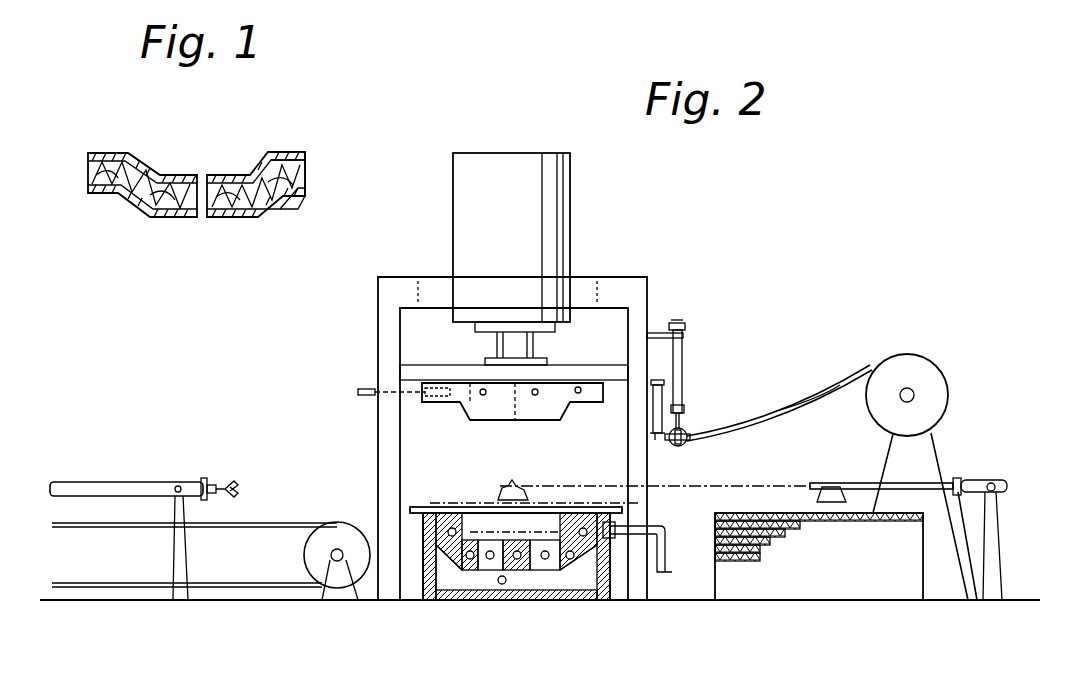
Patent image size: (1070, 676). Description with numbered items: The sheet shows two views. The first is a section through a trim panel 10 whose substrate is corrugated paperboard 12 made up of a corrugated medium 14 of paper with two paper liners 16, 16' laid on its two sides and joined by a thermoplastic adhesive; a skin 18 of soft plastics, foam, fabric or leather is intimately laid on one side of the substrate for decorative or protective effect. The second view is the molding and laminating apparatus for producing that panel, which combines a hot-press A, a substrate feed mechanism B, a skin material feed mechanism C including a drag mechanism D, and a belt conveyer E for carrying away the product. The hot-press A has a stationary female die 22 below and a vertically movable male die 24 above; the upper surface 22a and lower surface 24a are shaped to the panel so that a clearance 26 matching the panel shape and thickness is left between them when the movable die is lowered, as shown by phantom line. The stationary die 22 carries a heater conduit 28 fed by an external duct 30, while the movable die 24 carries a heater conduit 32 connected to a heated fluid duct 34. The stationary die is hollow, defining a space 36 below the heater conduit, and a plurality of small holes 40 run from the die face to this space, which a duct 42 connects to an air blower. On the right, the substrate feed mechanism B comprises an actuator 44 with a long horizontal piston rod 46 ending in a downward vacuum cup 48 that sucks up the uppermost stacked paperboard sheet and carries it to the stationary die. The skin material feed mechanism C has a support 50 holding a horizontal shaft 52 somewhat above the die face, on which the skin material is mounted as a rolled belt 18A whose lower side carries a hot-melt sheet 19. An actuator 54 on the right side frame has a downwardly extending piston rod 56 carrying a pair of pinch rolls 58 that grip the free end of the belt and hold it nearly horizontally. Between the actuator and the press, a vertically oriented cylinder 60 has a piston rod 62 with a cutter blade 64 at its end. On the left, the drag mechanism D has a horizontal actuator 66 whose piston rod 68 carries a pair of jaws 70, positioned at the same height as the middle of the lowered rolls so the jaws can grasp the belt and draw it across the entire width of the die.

In FIG. 1, the trim panel 10 is at (271, 147).
In FIG. 1, the corrugated paperboard 12 is at (309, 174).
In FIG. 2, the corrugated paperboard 12 is at (738, 487).
In FIG. 1, the corrugated medium 14 is at (88, 178).
In FIG. 1, the paper liner 16 is at (315, 145).
In FIG. 1, the paper liner 16' is at (326, 212).
In FIG. 1, the skin 18 is at (131, 160).
In FIG. 2, the rolled belt 18A is at (783, 412).
In FIG. 2, the hot-melt sheet 19 is at (817, 396).
In FIG. 2, the hot-press A is at (612, 276).
In FIG. 2, the substrate feed mechanism B is at (958, 477).
In FIG. 2, the skin material feed mechanism C is at (716, 385).
In FIG. 2, the drag mechanism D is at (226, 478).
In FIG. 2, the belt conveyer E is at (283, 518).
In FIG. 2, the stationary die 22 is at (608, 598).
In FIG. 2, the upper surface 22a is at (434, 512).
In FIG. 2, the movable die 24 is at (473, 405).
In FIG. 2, the lower surface 24a is at (512, 422).
In FIG. 2, the clearance 26 is at (494, 500).
In FIG. 2, the heater conduit 28 is at (480, 540).
In FIG. 2, the external duct 30 is at (666, 548).
In FIG. 2, the heater conduit 32 is at (581, 388).
In FIG. 2, the heated fluid duct 34 is at (358, 392).
In FIG. 2, the space 36 is at (430, 597).
In FIG. 2, the holes 40 is at (470, 562).
In FIG. 2, the duct 42 is at (504, 585).
In FIG. 2, the actuator 44 is at (978, 488).
In FIG. 2, the piston rod 46 is at (872, 512).
In FIG. 2, the vacuum cup 48 is at (826, 488).
In FIG. 2, the support 50 is at (932, 440).
In FIG. 2, the horizontal shaft 52 is at (915, 392).
In FIG. 2, the actuator 54 is at (684, 351).
In FIG. 2, the piston rod 56 is at (683, 428).
In FIG. 2, the rolls 58 is at (690, 442).
In FIG. 2, the cylinder 60 is at (683, 390).
In FIG. 2, the piston rod 62 is at (655, 428).
In FIG. 2, the cutter blade 64 is at (657, 440).
In FIG. 2, the actuator 66 is at (154, 482).
In FIG. 2, the piston rod 68 is at (210, 482).
In FIG. 2, the jaws 70 is at (238, 487).